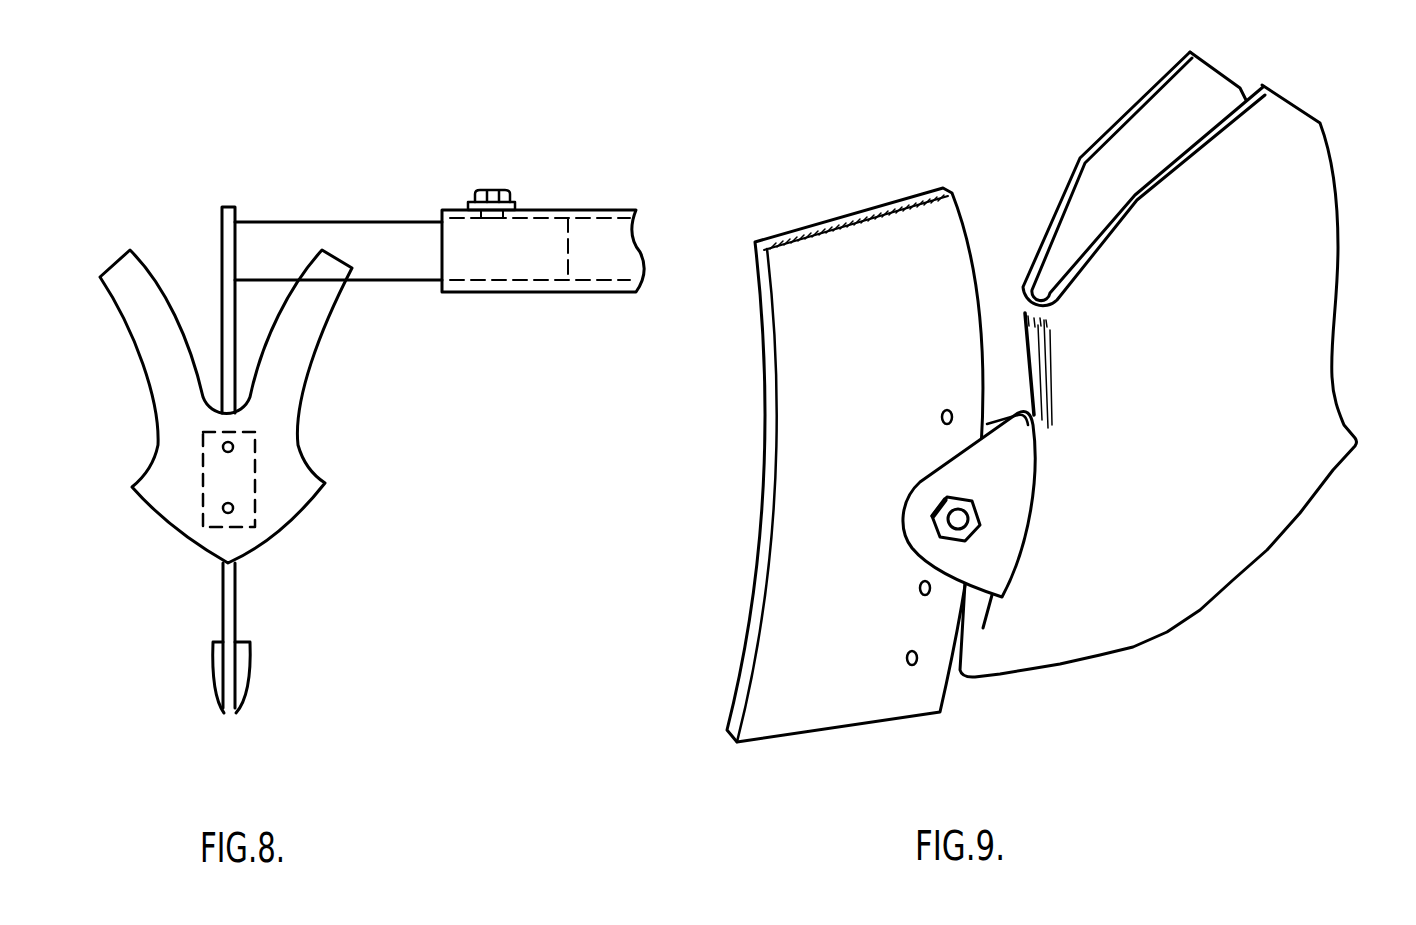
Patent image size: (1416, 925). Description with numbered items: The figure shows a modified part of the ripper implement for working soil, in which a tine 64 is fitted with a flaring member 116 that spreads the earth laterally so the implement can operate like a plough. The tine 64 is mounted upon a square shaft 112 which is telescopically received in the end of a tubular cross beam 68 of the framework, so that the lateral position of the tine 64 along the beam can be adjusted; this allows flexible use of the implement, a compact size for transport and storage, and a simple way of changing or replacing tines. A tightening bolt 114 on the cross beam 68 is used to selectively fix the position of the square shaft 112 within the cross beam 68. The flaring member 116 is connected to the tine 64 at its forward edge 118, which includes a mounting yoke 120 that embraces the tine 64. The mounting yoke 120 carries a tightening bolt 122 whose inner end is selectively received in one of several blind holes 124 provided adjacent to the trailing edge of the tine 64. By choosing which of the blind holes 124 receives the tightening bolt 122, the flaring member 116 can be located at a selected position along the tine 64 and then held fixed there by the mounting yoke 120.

In FIG. 8, the tine 64 is at (247, 615).
In FIG. 9, the tine 64 is at (795, 328).
In FIG. 8, the cross beam 68 is at (585, 208).
In FIG. 8, the square shaft 112 is at (403, 260).
In FIG. 8, the tightening bolt 114 is at (493, 188).
In FIG. 8, the flaring member 116 is at (168, 505).
In FIG. 9, the flaring member 116 is at (1217, 555).
In FIG. 9, the forward edge 118 is at (983, 627).
In FIG. 9, the mounting yoke 120 is at (990, 543).
In FIG. 9, the tightening bolt 122 is at (918, 587).
In FIG. 9, the blind holes 124 is at (940, 417).